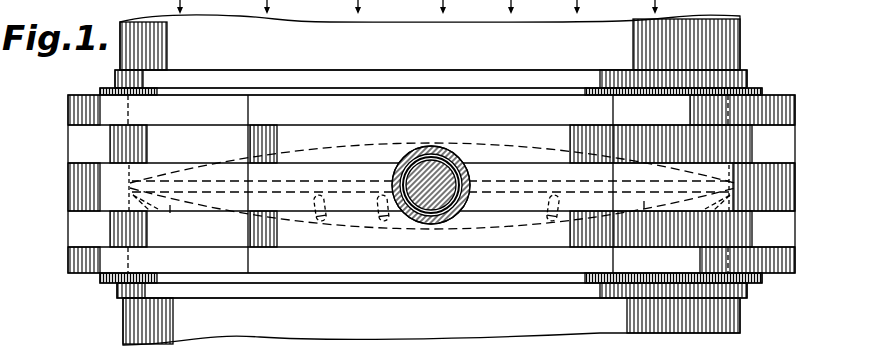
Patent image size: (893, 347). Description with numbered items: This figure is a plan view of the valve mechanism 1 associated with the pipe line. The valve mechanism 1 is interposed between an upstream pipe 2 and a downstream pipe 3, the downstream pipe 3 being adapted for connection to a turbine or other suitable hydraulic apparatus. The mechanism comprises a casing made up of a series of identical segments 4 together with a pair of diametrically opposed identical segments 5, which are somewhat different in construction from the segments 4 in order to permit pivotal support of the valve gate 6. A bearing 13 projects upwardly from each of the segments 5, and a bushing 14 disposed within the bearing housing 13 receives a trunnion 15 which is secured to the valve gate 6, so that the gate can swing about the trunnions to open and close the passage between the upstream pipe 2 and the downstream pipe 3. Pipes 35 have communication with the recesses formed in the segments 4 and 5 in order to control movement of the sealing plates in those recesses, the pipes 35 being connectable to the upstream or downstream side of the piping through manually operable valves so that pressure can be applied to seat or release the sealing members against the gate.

The valve mechanism 1 is at (804, 141).
The upstream pipe 2 is at (280, 32).
The downstream pipe 3 is at (728, 313).
The segments 4 is at (174, 207).
The segments 5 is at (498, 205).
The valve gate 6 is at (492, 145).
The bearing 13 is at (450, 153).
The bushing 14 is at (408, 152).
The trunnion 15 is at (430, 172).
The pipes 35 is at (316, 222).